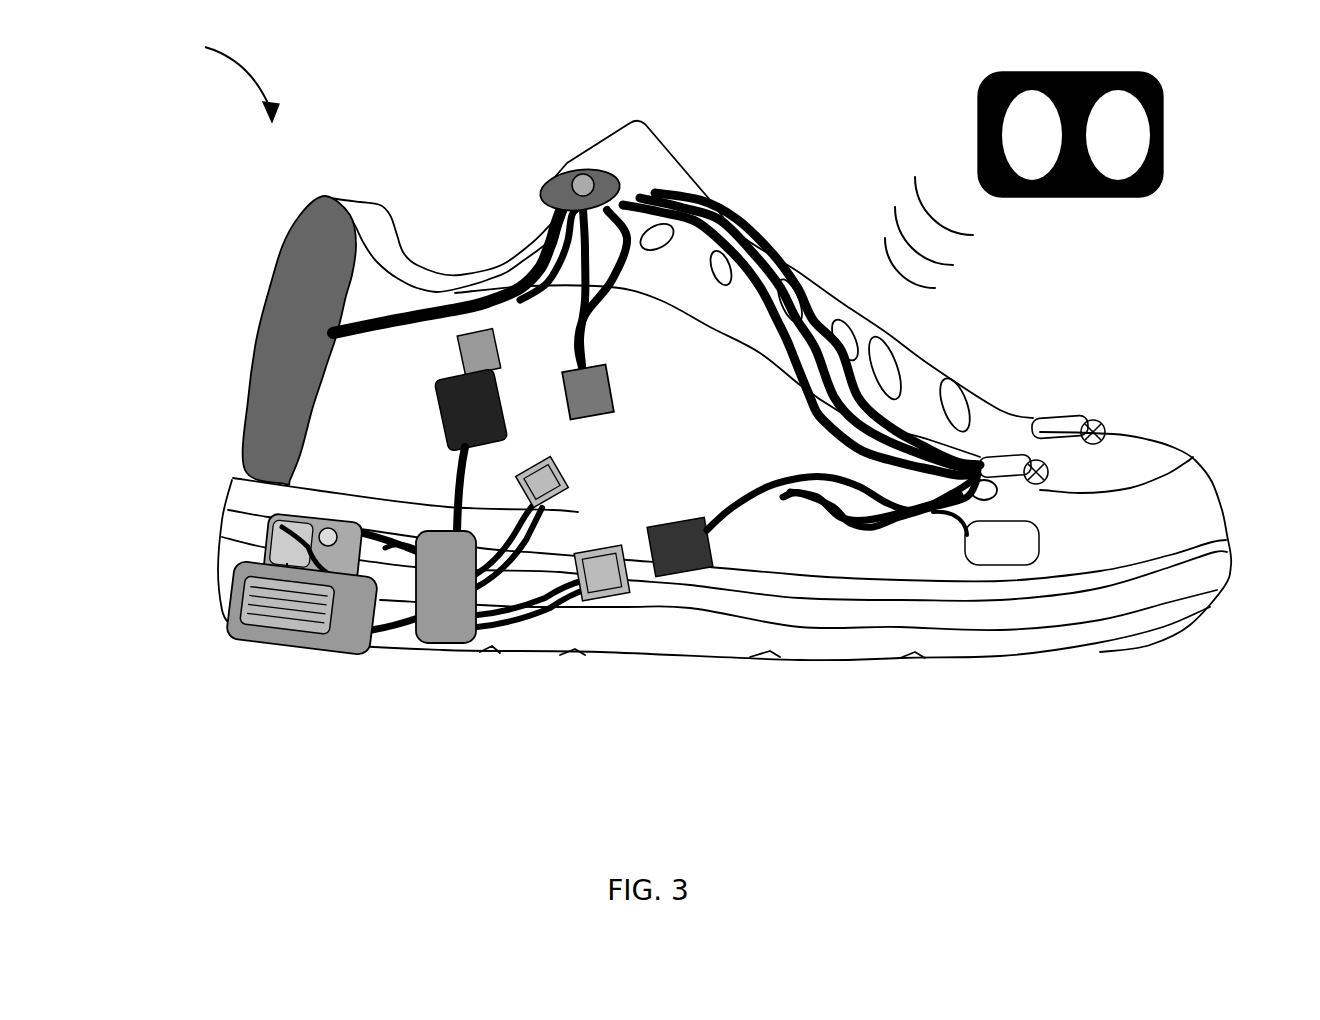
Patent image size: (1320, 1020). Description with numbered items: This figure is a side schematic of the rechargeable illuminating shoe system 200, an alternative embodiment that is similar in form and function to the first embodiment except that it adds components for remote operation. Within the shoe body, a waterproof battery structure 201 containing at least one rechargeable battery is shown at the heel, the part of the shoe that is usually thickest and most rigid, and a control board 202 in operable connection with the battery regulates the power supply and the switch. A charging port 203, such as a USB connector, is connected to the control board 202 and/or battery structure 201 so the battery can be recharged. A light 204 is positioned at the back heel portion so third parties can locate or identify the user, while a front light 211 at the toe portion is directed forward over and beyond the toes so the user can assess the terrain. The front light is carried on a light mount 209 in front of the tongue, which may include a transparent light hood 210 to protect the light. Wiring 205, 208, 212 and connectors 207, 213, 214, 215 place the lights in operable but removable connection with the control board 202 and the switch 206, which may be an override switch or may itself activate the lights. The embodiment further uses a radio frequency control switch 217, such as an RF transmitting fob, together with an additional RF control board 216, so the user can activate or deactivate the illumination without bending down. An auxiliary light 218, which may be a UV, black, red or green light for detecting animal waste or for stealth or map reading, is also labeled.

The rechargeable illuminating shoe system 200 is at (218, 79).
The battery structure 201 is at (268, 640).
The control board 202 is at (265, 530).
The charging port 203 is at (435, 423).
The light 204 is at (270, 272).
The wiring 205 is at (408, 320).
The switch 206 is at (548, 185).
The connector 207 is at (603, 363).
The wiring 208 is at (763, 307).
The light mount 209 is at (1038, 416).
The light hood 210 is at (1060, 427).
The light 211 is at (1037, 503).
The wiring 212 is at (905, 520).
The connector 213 is at (683, 570).
The connector 214 is at (612, 600).
The connector 215 is at (538, 510).
The RF control board 216 is at (424, 645).
The radio frequency control switch 217 is at (1168, 148).
The auxiliary light 218 is at (986, 538).